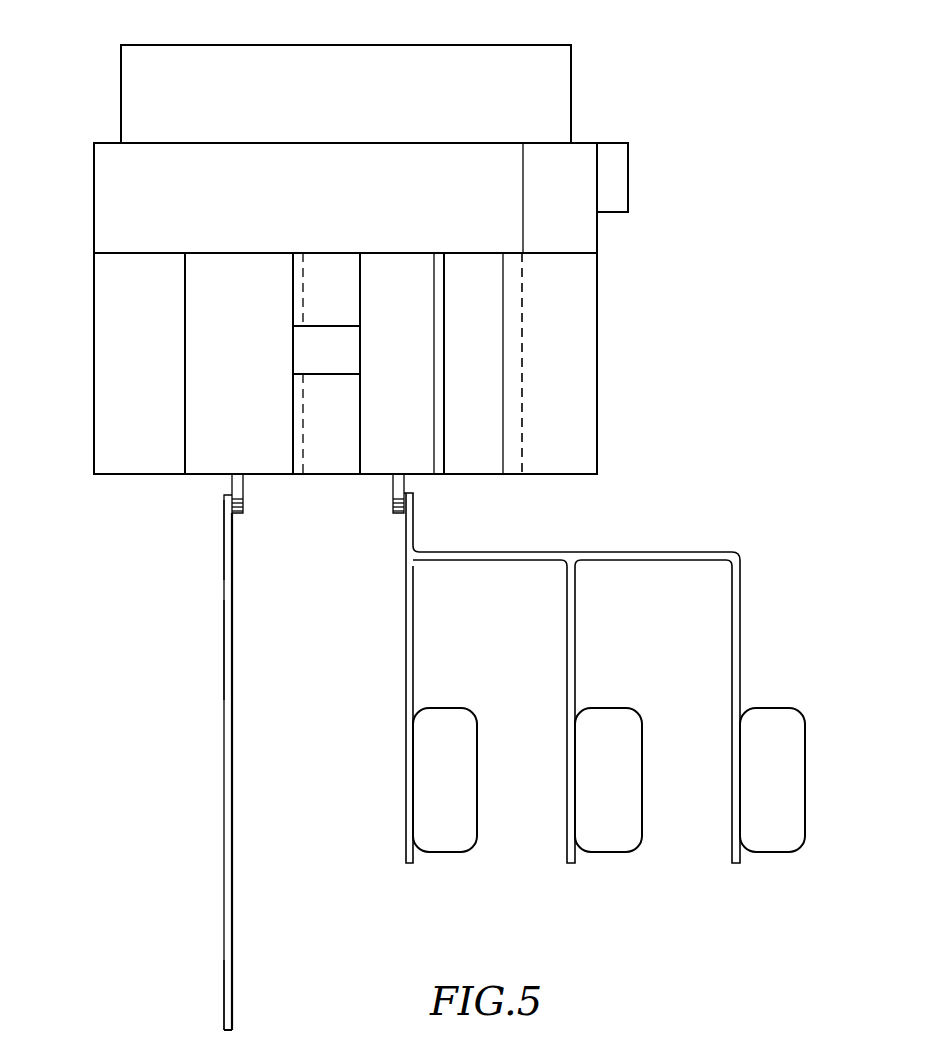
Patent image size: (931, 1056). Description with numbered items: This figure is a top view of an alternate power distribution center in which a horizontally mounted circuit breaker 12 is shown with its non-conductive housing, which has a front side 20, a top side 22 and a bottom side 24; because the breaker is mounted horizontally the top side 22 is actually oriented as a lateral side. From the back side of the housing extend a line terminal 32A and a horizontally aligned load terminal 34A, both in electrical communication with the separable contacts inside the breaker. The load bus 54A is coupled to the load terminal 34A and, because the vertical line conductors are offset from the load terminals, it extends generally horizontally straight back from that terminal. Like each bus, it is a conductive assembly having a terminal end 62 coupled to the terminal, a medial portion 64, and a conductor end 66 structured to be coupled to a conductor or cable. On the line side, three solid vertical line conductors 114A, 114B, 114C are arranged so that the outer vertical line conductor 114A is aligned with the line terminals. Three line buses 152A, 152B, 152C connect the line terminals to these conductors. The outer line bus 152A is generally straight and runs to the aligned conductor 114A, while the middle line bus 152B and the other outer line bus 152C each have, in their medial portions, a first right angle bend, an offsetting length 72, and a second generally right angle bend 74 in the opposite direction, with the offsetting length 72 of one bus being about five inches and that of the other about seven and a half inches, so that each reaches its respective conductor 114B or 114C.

The front side 20 is at (468, 45).
The circuit breaker 12 is at (94, 172).
The bottom side 24 is at (94, 380).
The top side 22 is at (597, 340).
The load terminal 34A is at (245, 487).
The line terminal 32A is at (406, 482).
The load bus 54A is at (224, 727).
The terminal end 62 is at (233, 530).
The medial portion 64 is at (232, 652).
The conductor end 66 is at (222, 1018).
The offsetting length 72 is at (500, 552).
The second generally right angle bend 74 is at (570, 551).
The outer line bus 152A is at (405, 757).
The middle line bus 152B is at (567, 760).
The other outer line bus 152C is at (732, 750).
The outer vertical line conductor 114A is at (443, 708).
The vertical line conductor 114B is at (608, 708).
The vertical line conductor 114C is at (773, 708).